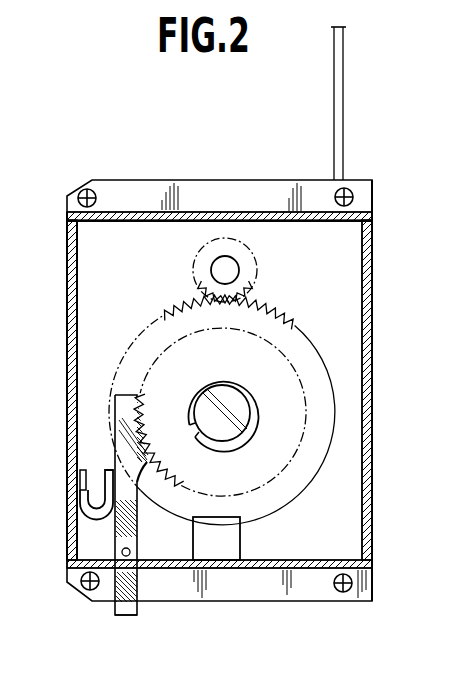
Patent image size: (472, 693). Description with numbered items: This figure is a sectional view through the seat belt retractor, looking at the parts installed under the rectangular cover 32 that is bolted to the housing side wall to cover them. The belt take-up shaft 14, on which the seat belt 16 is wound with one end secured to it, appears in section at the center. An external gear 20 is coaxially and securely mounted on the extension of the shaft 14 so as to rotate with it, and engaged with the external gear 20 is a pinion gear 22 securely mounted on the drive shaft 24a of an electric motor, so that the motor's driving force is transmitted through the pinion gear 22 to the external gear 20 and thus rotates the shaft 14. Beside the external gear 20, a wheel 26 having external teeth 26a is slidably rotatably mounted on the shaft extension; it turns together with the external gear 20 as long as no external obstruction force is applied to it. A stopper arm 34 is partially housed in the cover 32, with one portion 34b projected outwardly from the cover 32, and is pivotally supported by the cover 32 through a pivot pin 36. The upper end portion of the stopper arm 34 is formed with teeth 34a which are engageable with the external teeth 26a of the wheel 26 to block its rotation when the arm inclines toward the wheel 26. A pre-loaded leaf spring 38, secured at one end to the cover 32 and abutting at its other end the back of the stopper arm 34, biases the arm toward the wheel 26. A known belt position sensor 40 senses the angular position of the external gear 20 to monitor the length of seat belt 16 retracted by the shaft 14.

The belt take-up shaft 14 is at (256, 436).
The seat belt 16 is at (344, 89).
The external gear 20 is at (322, 383).
The pinion gear 22 is at (248, 285).
The drive shaft 24a is at (225, 268).
The wheel 26 is at (258, 488).
The external teeth 26a is at (177, 486).
The rectangular cover 32 is at (372, 318).
The stopper arm 34 is at (122, 532).
The teeth 34a is at (138, 400).
The portion 34b is at (133, 612).
The pivot pin 36 is at (124, 556).
The leaf spring 38 is at (79, 504).
The belt position sensor 40 is at (240, 543).